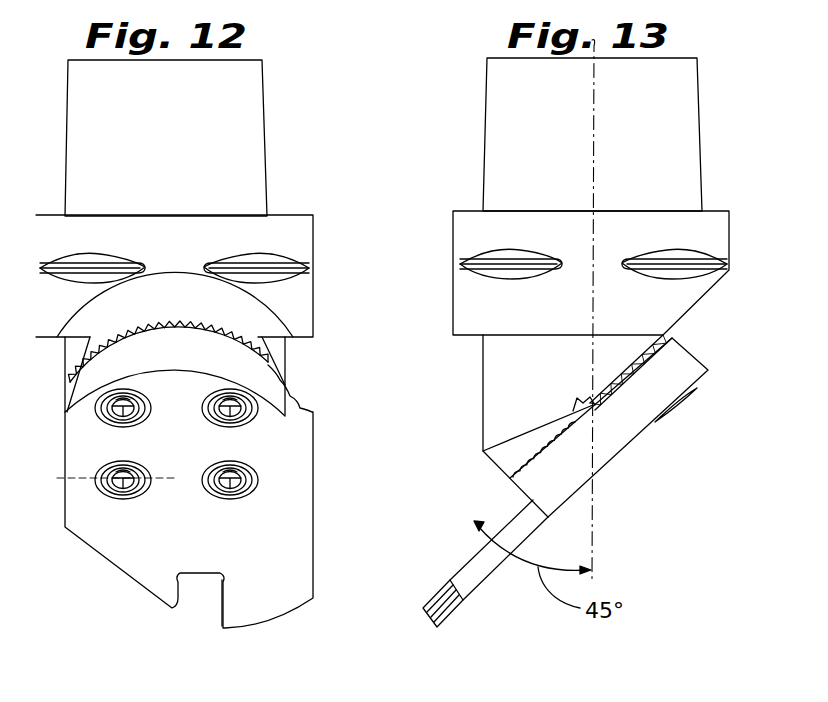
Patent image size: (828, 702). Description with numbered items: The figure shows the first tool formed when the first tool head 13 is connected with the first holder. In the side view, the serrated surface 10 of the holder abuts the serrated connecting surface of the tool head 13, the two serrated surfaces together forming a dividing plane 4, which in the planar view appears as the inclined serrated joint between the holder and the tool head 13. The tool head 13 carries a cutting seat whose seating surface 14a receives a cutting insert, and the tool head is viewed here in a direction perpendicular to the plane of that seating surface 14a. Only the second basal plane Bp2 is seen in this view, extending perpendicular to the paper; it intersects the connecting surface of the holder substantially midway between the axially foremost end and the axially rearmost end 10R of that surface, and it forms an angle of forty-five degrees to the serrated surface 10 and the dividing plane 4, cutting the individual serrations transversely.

In FIG. 13, the dividing plane 4 is at (575, 411).
In FIG. 13, the serrated surface 10 is at (511, 479).
In FIG. 13, the axially rearmost end 10R is at (672, 332).
In FIG. 12, the first tool head 13 is at (323, 458).
In FIG. 13, the first tool head 13 is at (653, 428).
In FIG. 13, the seating surface 14a is at (450, 610).
In FIG. 13, the second basal plane Bp2 is at (596, 508).